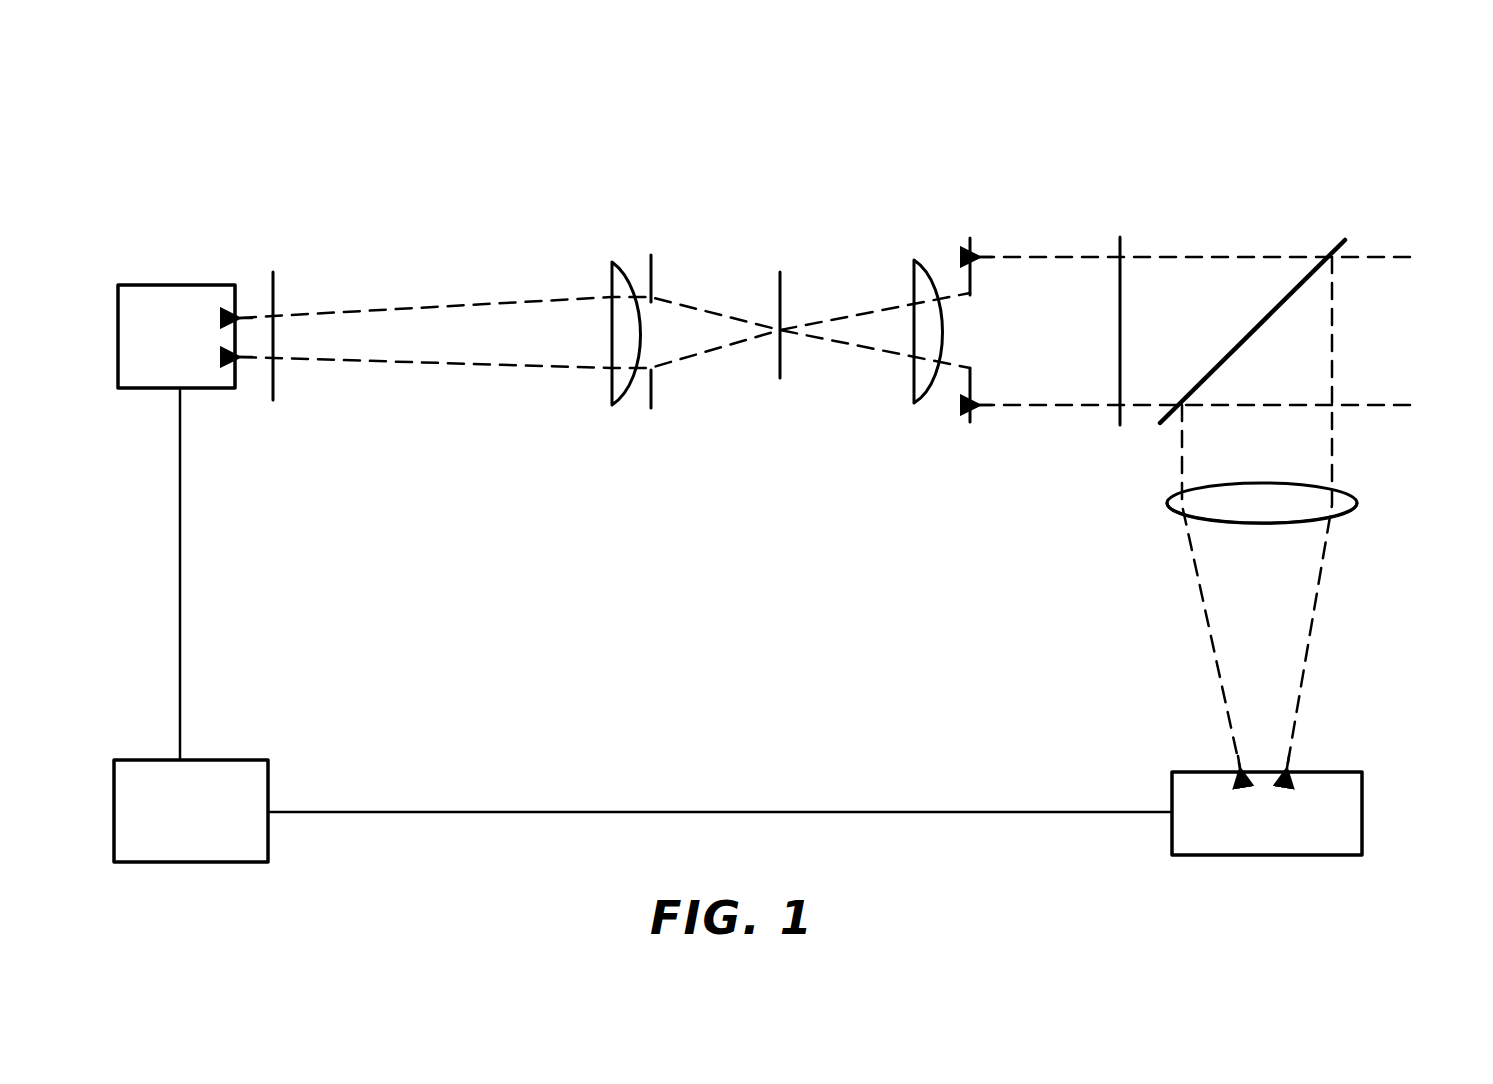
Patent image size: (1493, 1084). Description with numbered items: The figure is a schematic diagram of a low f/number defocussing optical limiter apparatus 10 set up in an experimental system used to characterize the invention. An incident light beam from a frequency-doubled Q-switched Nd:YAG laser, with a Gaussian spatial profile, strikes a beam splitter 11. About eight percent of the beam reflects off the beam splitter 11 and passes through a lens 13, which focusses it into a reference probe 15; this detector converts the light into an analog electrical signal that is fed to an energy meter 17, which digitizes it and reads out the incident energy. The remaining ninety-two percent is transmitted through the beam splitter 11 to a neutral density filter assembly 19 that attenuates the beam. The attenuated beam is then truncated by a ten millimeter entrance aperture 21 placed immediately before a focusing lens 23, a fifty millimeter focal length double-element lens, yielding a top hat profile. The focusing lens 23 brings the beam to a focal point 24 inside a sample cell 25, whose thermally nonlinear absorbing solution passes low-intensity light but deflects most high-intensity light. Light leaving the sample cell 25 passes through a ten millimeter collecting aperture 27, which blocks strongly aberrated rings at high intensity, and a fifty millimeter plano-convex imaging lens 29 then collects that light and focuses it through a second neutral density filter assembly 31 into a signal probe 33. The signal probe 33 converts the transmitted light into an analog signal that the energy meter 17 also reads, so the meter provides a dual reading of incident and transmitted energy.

The optical measurement system 10 is at (1068, 133).
The beam splitter 11 is at (1244, 341).
The lens 13 is at (1287, 450).
The reference probe 15 is at (1330, 772).
The energy meter 17 is at (230, 760).
The neutral density filter assembly 19 is at (1122, 248).
The entrance aperture 21 is at (969, 392).
The focusing lens 23 is at (914, 272).
The focal point 24 is at (782, 332).
The sample cell 25 is at (782, 306).
The collecting aperture 27 is at (612, 272).
The plano-convex imaging lens 29 is at (653, 390).
The neutral density filter assembly 31 is at (275, 294).
The signal probe 33 is at (185, 285).